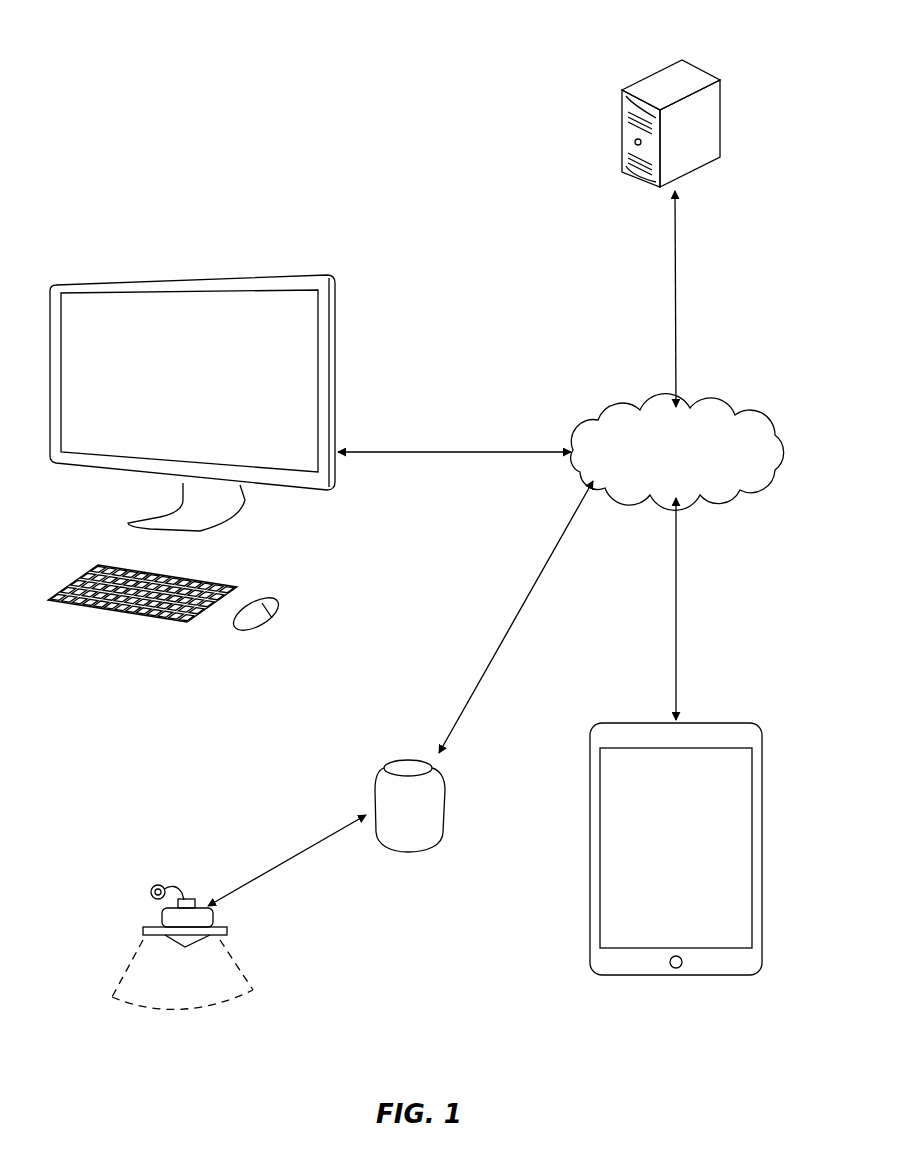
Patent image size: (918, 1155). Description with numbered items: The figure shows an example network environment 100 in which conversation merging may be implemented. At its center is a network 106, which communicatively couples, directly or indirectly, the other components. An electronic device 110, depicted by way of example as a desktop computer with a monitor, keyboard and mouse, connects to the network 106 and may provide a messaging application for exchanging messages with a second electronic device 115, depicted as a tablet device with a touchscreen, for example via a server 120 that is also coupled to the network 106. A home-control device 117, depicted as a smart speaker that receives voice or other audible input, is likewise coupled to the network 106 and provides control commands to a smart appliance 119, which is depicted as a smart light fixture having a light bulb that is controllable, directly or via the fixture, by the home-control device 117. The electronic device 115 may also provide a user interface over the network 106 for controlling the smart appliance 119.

The network environment 100 is at (48, 150).
The server 120 is at (663, 58).
The network 106 is at (588, 424).
The electronic device 110 is at (196, 660).
The home-control device 117 is at (405, 855).
The smart appliance 119 is at (162, 908).
The electronic device 115 is at (677, 978).